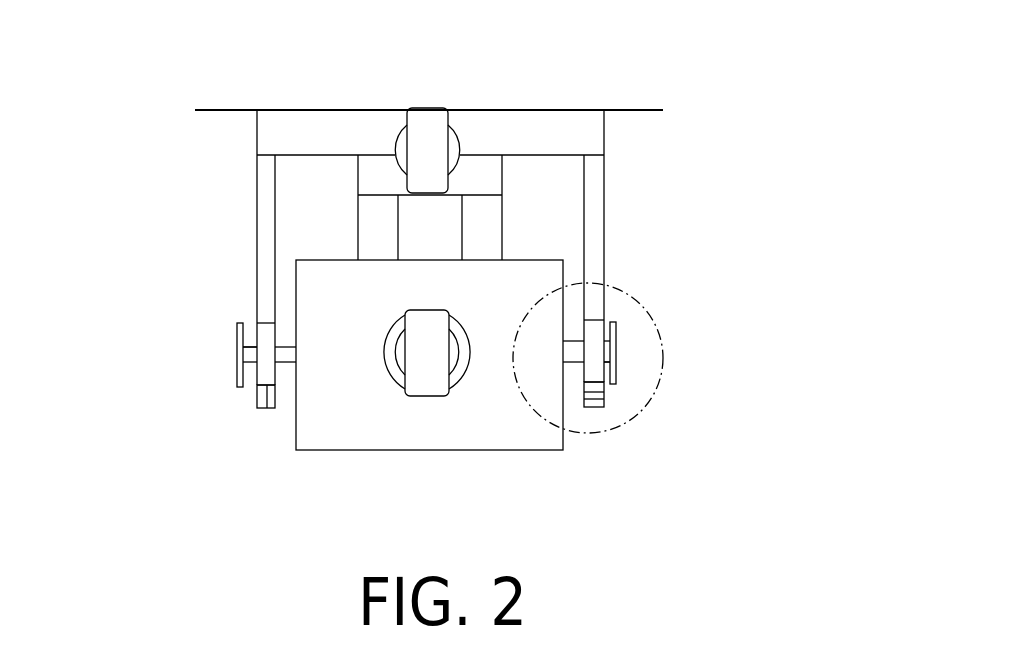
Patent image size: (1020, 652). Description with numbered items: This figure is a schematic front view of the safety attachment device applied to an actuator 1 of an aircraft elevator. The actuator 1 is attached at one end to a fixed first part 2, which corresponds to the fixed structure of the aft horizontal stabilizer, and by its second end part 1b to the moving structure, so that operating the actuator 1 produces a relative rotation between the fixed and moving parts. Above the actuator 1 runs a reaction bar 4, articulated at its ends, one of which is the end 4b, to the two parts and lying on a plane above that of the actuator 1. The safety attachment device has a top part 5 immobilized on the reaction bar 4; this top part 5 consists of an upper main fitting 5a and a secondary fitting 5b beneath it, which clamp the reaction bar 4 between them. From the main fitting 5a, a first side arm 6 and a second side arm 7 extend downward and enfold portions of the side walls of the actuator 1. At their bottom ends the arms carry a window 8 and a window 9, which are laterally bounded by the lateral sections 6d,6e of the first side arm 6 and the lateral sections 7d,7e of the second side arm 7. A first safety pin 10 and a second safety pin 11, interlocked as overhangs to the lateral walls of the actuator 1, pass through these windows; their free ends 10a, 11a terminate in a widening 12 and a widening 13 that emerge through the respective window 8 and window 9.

The actuator 1 is at (473, 460).
The second end part 1b is at (421, 360).
The first part 2 is at (543, 224).
The reaction bar 4 is at (457, 135).
The end of reaction bar 4b is at (422, 140).
The top part 5 is at (333, 100).
The upper main fitting 5a is at (560, 124).
The secondary fitting 5b is at (482, 183).
The first side arm 6 is at (257, 185).
The lateral sections 6d,6e is at (257, 405).
The second side arm 7 is at (605, 212).
The lateral sections 7d,7e is at (604, 381).
The window 8 is at (261, 371).
The window 9 is at (594, 393).
The first safety pin 10 is at (285, 362).
The free end 10a is at (252, 357).
The second safety pin 11 is at (569, 353).
The free end 11a is at (607, 350).
The widening 12 is at (243, 362).
The widening 13 is at (616, 330).